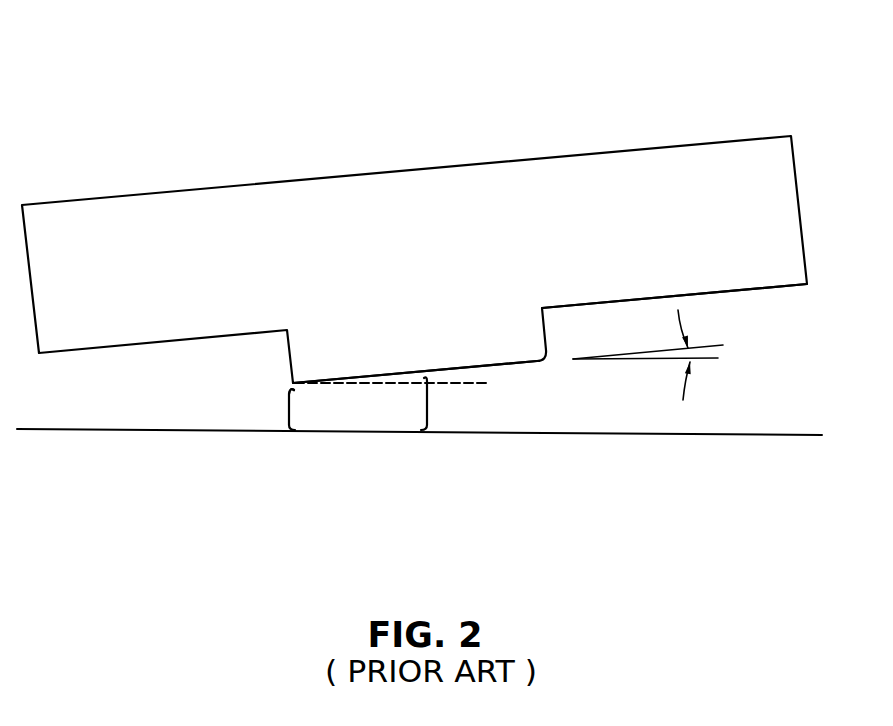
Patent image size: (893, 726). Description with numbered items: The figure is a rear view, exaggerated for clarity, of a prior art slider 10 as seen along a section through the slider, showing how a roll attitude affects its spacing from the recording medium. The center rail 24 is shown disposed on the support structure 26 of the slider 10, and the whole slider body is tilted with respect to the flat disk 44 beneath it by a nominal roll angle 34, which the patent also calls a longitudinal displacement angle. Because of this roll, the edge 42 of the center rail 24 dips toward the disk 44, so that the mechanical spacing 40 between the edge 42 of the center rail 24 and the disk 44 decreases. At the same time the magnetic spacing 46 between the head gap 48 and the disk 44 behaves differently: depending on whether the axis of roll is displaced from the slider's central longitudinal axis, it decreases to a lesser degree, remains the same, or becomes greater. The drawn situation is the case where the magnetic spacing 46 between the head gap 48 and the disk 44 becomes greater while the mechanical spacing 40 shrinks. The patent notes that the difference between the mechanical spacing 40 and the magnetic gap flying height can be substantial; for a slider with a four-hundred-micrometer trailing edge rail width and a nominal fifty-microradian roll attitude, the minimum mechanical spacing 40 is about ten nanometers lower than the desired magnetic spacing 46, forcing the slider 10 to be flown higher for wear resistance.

The slider 10 is at (328, 134).
The center rail 24 is at (523, 347).
The support structure 26 is at (742, 290).
The roll angle 34 is at (705, 369).
The mechanical spacing 40 is at (285, 408).
The edge of the center rail 42 is at (294, 391).
The disk 44 is at (690, 435).
The magnetic spacing 46 is at (431, 405).
The head gap 48 is at (491, 407).